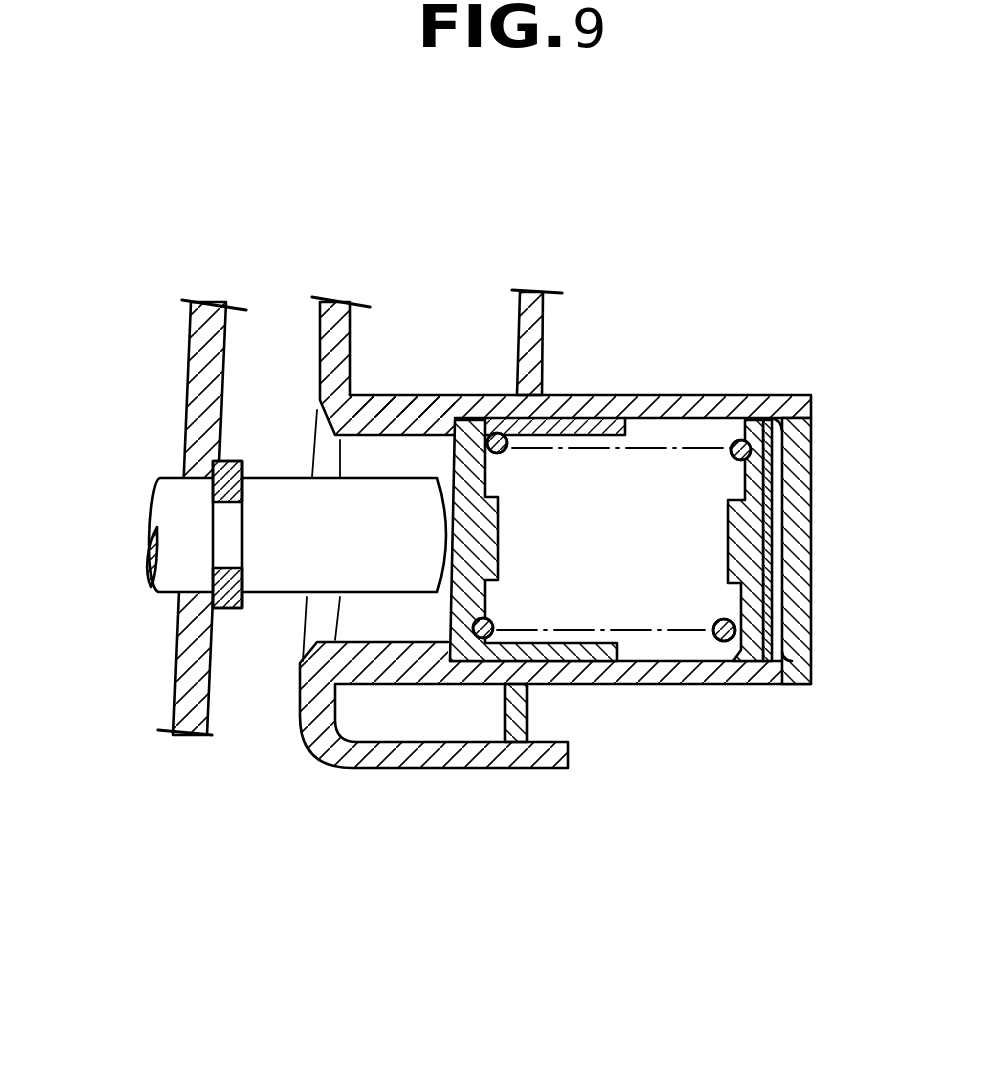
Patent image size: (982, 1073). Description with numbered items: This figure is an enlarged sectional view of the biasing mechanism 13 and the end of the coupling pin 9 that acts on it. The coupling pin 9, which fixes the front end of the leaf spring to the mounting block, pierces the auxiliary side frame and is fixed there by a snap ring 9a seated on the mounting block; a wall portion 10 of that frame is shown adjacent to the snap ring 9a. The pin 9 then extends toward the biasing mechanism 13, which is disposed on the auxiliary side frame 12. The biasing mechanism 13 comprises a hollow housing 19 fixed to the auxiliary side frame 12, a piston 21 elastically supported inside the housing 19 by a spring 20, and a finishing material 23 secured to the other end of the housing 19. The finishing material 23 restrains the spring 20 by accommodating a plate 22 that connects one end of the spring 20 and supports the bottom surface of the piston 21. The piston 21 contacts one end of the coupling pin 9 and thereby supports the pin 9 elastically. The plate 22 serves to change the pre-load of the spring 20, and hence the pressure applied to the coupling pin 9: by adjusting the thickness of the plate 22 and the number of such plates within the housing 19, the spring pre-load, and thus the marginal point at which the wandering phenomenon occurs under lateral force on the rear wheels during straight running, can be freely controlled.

The coupling pin 9 is at (175, 517).
The snap ring 9a is at (237, 610).
The wall 10 is at (185, 673).
The auxiliary side frame 12 is at (396, 758).
The biasing mechanism 13 is at (705, 690).
The hollow housing 19 is at (652, 405).
The spring 20 is at (715, 627).
The piston 21 is at (483, 535).
The plate 22 is at (766, 470).
The finishing material 23 is at (800, 432).